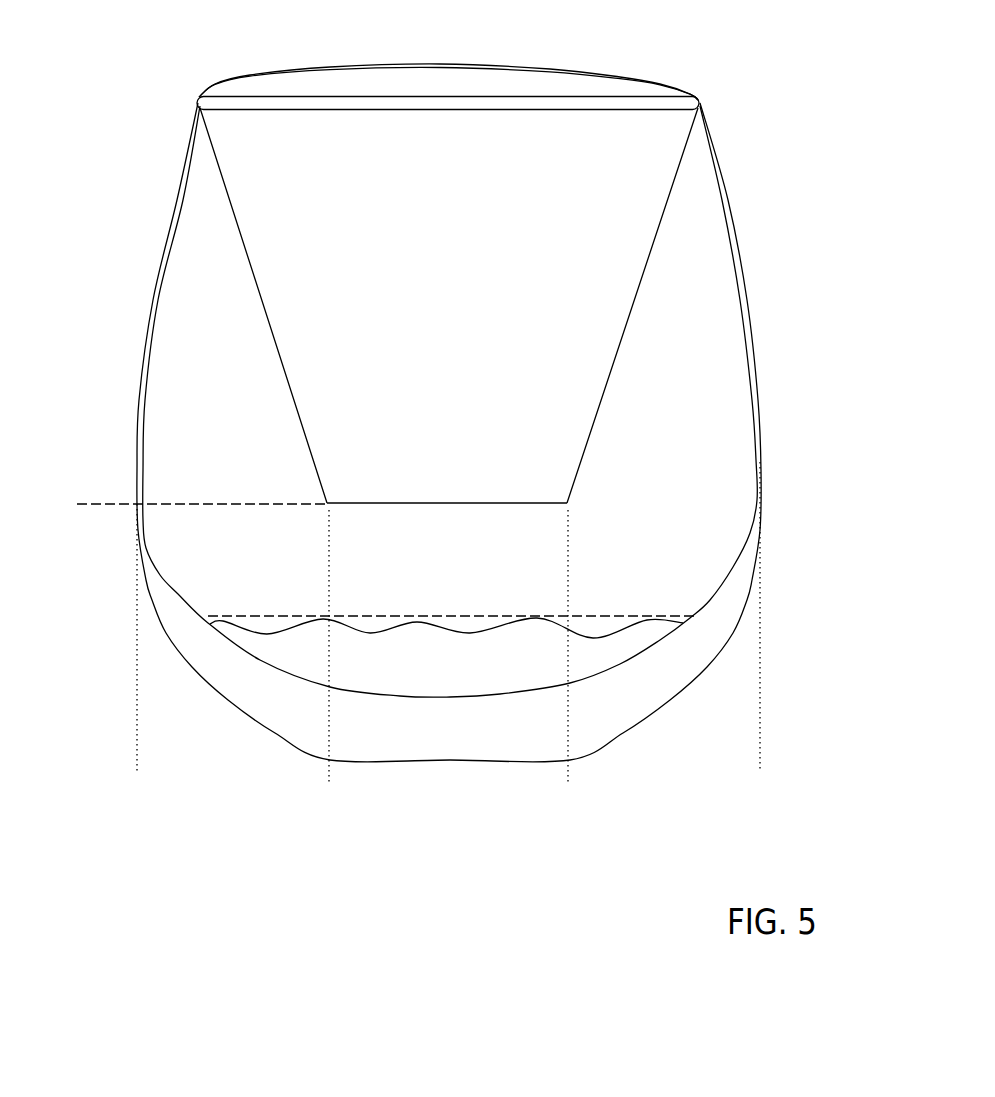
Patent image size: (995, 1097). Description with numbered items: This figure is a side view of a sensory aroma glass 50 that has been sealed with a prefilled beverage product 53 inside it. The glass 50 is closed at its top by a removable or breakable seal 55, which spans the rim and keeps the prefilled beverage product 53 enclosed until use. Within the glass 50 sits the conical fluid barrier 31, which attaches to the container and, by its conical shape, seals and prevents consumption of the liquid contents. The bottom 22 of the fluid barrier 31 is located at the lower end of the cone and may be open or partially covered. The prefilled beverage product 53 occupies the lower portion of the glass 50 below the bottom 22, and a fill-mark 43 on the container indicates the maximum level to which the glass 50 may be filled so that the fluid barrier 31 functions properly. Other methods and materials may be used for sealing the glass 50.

The bottom 22 is at (447, 504).
The fluid barrier 31 is at (468, 309).
The fill-mark 43 is at (143, 557).
The sensory aroma glass 50 is at (760, 461).
The prefilled beverage product 53 is at (452, 677).
The seal 55 is at (578, 69).